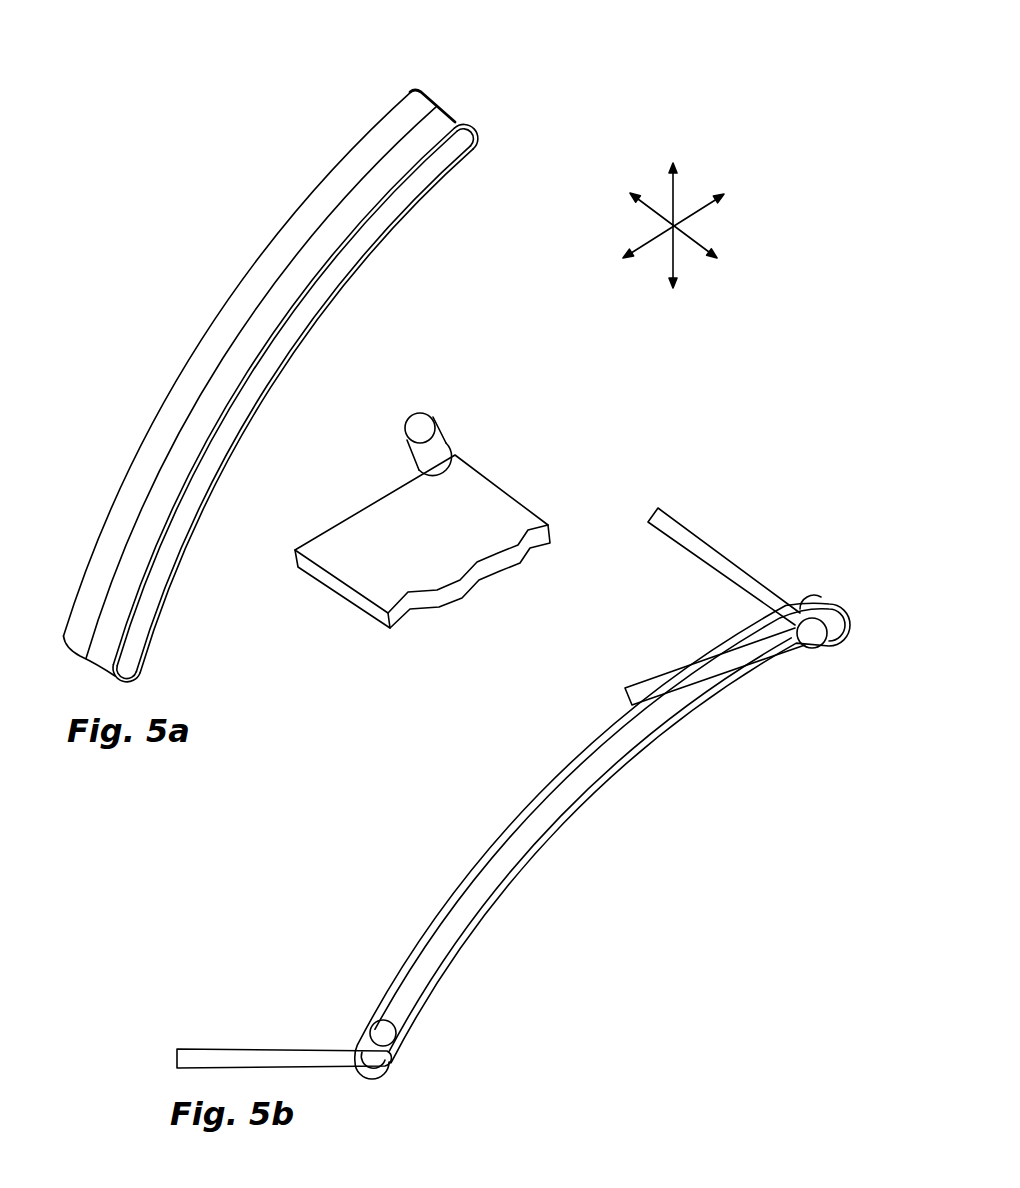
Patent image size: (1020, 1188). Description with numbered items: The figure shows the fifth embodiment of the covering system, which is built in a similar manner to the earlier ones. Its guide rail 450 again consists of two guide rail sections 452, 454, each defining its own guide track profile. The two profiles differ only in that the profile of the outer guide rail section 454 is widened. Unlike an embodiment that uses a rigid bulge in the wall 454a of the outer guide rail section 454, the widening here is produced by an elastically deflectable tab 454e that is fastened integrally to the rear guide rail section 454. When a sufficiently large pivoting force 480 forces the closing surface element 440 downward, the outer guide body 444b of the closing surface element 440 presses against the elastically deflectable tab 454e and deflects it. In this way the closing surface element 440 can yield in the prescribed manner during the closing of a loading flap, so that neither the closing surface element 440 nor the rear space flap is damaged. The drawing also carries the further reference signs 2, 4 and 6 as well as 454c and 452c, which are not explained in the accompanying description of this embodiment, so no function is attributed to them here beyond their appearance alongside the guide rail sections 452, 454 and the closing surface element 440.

In FIG. 5A, the guide rail 450 is at (324, 362).
In FIG. 5A, the outer guide rail section 454 is at (333, 359).
In FIG. 5A, the wall 454a is at (307, 210).
In FIG. 5A, the elastically deflectable tab 454e is at (397, 108).
In FIG. 5A, the guide rail section 452 is at (483, 121).
In FIG. 5A, the closing surface element 440 is at (386, 636).
In FIG. 5A, the outer guide body 444b is at (418, 428).
In FIG. 5A, the first axis 2 is at (682, 230).
In FIG. 5A, the second axis 4 is at (676, 190).
In FIG. 5A, the third axis 6 is at (703, 206).
In FIG. 5B, the strap 454c is at (710, 697).
In FIG. 5B, the rail hinge 452c is at (830, 600).
In FIG. 5B, the pivoting force 480 is at (625, 620).